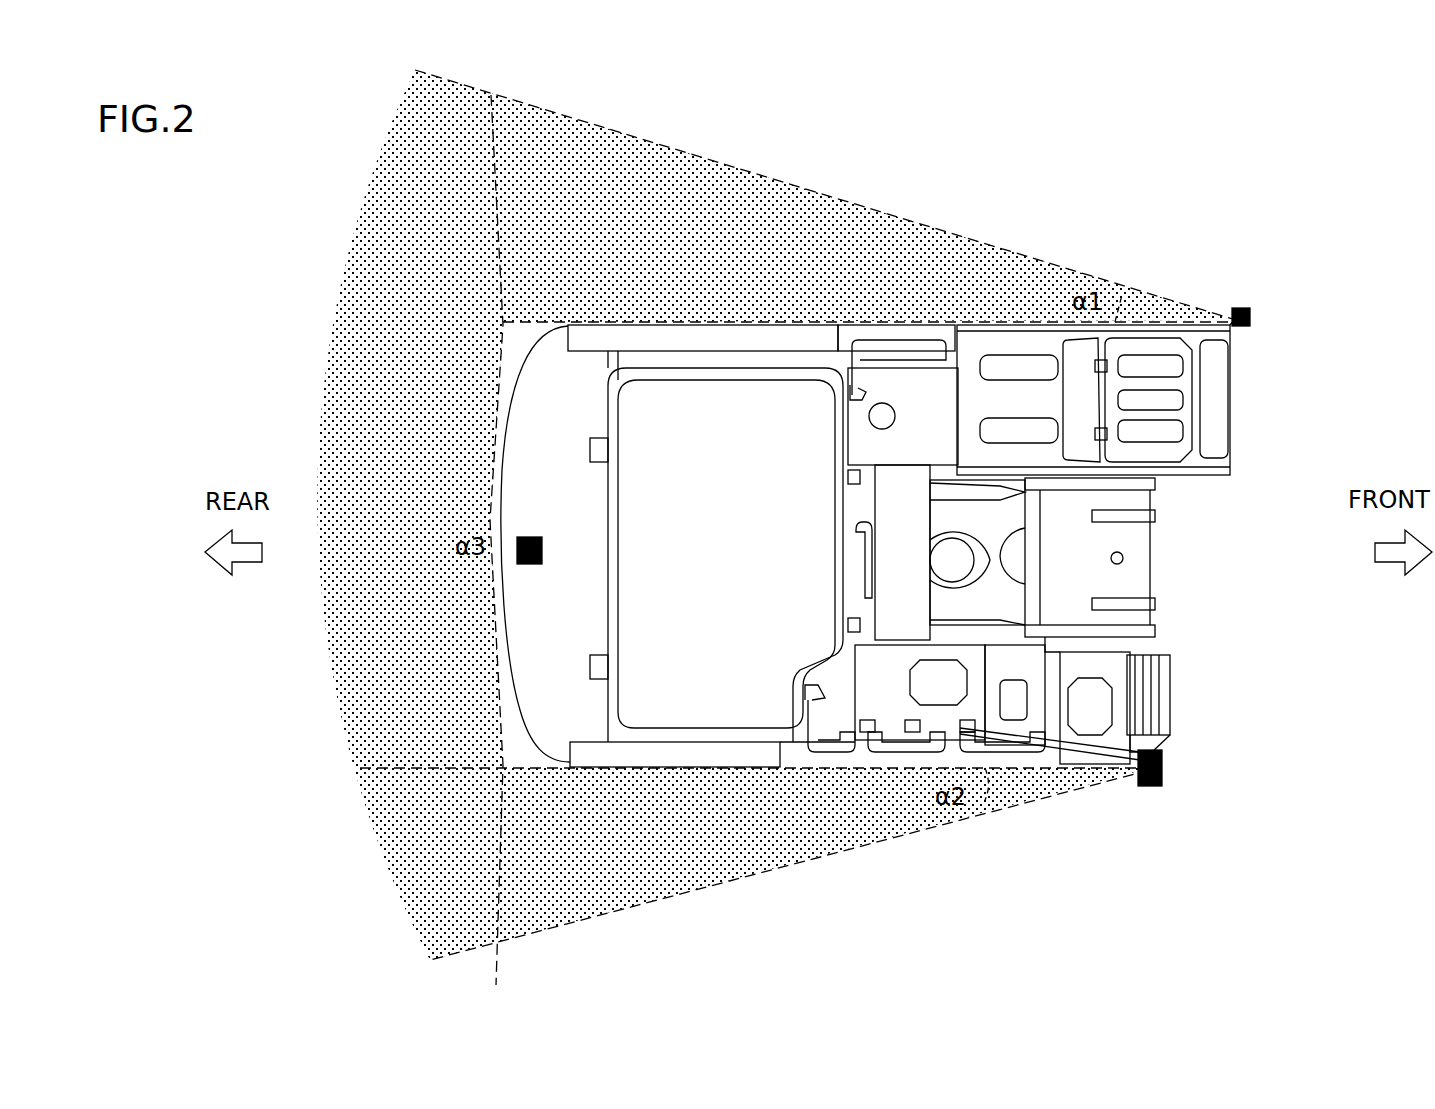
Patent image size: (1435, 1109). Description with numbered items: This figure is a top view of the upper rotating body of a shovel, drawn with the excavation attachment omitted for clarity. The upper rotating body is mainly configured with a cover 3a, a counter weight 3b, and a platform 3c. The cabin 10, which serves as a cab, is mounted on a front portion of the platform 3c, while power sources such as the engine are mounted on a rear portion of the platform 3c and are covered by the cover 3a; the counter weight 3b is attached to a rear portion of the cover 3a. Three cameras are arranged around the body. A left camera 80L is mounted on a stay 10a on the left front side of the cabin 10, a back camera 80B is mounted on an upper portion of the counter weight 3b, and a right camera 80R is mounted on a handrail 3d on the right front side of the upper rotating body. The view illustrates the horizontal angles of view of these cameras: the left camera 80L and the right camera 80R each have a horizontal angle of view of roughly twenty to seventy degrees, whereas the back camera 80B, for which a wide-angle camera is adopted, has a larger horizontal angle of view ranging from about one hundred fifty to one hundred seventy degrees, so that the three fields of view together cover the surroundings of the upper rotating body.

The cover 3a is at (790, 342).
The counter weight 3b is at (537, 380).
The platform 3c is at (1150, 498).
The handrail 3d is at (1105, 772).
The cabin 10 is at (1222, 410).
The stay 10a is at (1252, 318).
The left camera 80L is at (1240, 308).
The right camera 80R is at (1162, 768).
The back camera 80B is at (542, 545).